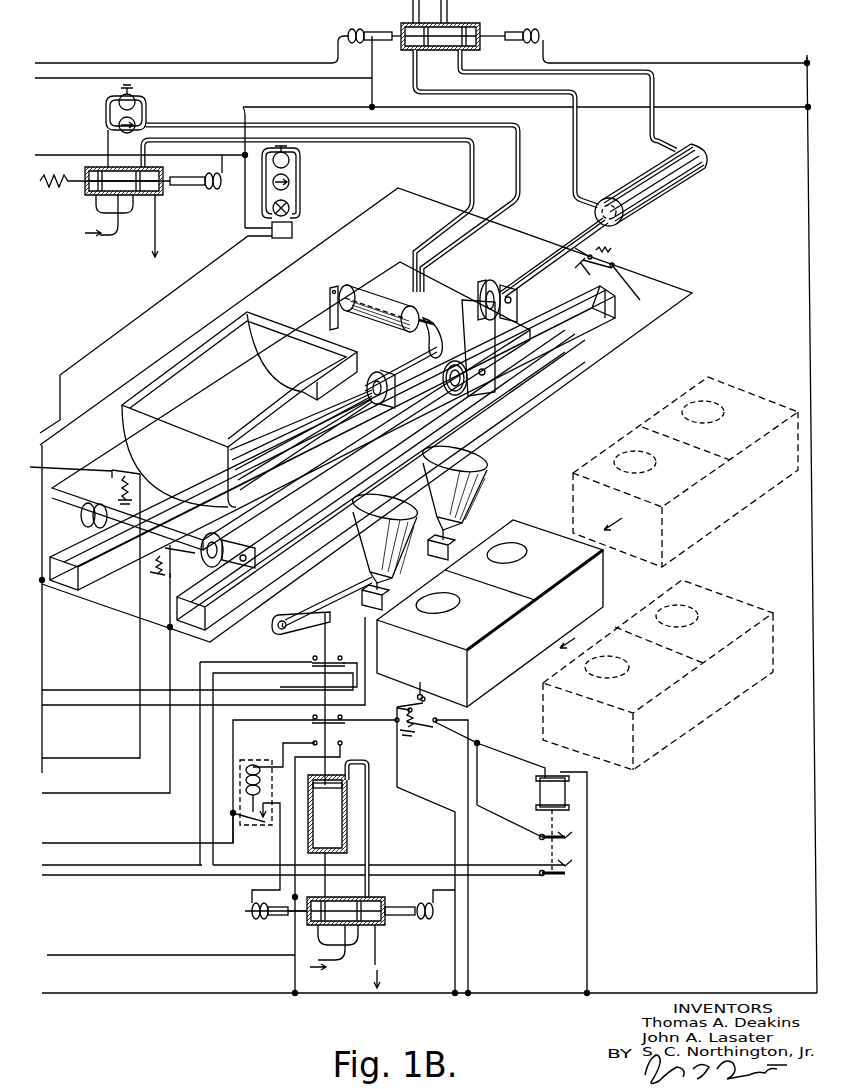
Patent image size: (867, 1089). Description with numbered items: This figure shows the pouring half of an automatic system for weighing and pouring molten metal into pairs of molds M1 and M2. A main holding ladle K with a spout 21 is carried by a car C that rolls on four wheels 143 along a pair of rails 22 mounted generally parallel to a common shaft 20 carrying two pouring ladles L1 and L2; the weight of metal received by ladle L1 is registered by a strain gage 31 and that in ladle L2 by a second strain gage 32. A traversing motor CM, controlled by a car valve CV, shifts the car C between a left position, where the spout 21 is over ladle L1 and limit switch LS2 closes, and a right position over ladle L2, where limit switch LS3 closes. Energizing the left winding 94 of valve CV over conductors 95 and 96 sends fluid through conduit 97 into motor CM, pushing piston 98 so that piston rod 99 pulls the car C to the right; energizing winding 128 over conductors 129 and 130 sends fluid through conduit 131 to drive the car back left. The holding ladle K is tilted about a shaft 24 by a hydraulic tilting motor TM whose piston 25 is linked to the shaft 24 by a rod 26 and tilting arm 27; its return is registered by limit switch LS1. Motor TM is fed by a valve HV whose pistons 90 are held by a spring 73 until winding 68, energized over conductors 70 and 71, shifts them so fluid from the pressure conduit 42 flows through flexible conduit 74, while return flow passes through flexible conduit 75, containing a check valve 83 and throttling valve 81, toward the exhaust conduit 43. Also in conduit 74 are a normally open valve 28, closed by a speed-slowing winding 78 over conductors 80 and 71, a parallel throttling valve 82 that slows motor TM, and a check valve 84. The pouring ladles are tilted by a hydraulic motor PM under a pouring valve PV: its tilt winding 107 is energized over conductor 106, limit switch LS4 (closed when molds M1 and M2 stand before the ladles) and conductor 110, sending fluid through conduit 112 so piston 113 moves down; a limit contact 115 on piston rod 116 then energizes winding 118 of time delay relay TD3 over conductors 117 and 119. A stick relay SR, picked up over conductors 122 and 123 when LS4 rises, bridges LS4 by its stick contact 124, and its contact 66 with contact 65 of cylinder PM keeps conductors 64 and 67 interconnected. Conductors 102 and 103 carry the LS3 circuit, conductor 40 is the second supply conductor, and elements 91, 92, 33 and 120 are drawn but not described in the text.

The conductor 129 is at (48, 60).
The conductor 95 is at (52, 82).
The left winding of car valve 94 is at (346, 33).
The conductor 96 is at (374, 98).
The winding of car valve 128 is at (533, 29).
The conductor 130 is at (720, 62).
The conduit 131 is at (658, 90).
The conductor 71 is at (292, 106).
The conduit 97 is at (580, 135).
The motor piston 98 is at (628, 190).
The piston rod 99 is at (582, 238).
The throttling valve 81 is at (137, 98).
The check valve 83 is at (137, 121).
The return conduit 75 is at (228, 122).
The conduit 74 is at (468, 180).
The conductor 70 is at (48, 152).
The spring 73 is at (50, 170).
The pistons of valve HV 90 is at (115, 167).
The winding of valve HV 68 is at (212, 173).
The pressure conduits 42 is at (112, 240).
The exhaust conduits 43 is at (160, 226).
The throttling valve 82 is at (290, 164).
The check valve 84 is at (290, 187).
The normally open valve 28 is at (290, 215).
The speed-slowing winding 78 is at (278, 240).
The conductor 102 is at (383, 200).
The conductor 80 is at (40, 425).
The rails 22 is at (72, 568).
The conductor 103 is at (625, 333).
The ladle shaft 24 is at (298, 457).
The piston 25 is at (378, 300).
The rod 26 is at (435, 315).
The tilting arm 27 is at (447, 334).
The spout 21 is at (378, 412).
The wheels 143 is at (80, 522).
The electrical line 91 is at (50, 470).
The electrical line 92 is at (50, 755).
The second strain gage 32 is at (433, 560).
The strain gage 31 is at (362, 600).
The common shaft 20 is at (348, 578).
The contact of pouring cylinder PM 65 is at (322, 662).
The electrical line 33 is at (55, 700).
The conductor 117 is at (52, 840).
The piston rod 116 is at (312, 733).
The limit contact 115 is at (342, 724).
The relay winding 118 is at (253, 765).
The conductor 64 is at (48, 865).
The conductor 67 is at (48, 878).
The contact of relay SR 66 is at (556, 880).
The stick contact 124 is at (548, 843).
The conductor 122 is at (478, 738).
The conductor 123 is at (590, 945).
The conductor 110 is at (470, 938).
The cylinder piston 113 is at (328, 790).
The conduit 112 is at (372, 851).
The tilt winding of pouring valve 107 is at (405, 920).
The return solenoid of pour valve 120 is at (247, 902).
The conductor 119 is at (292, 970).
The conductor 106 is at (47, 955).
The second supply conductor 40 is at (50, 995).
The car valve CV is at (398, 24).
The traversing motor CM is at (676, 190).
The holding ladle valve HV is at (106, 209).
The main holding ladle K is at (190, 350).
The car C is at (108, 440).
The tilting motor TM is at (388, 335).
The limit switch LS1 is at (110, 490).
The limit switch LS2 is at (168, 545).
The limit switch LS3 is at (600, 273).
The limit switch LS4 is at (432, 740).
The pouring ladle L1 is at (384, 539).
The pouring ladle L2 is at (454, 490).
The mold M1 is at (498, 682).
The mold M2 is at (606, 585).
The pouring motor PM is at (350, 797).
The pouring valve PV is at (376, 890).
The time delay relay TD3 is at (255, 826).
The stick relay SR is at (539, 790).